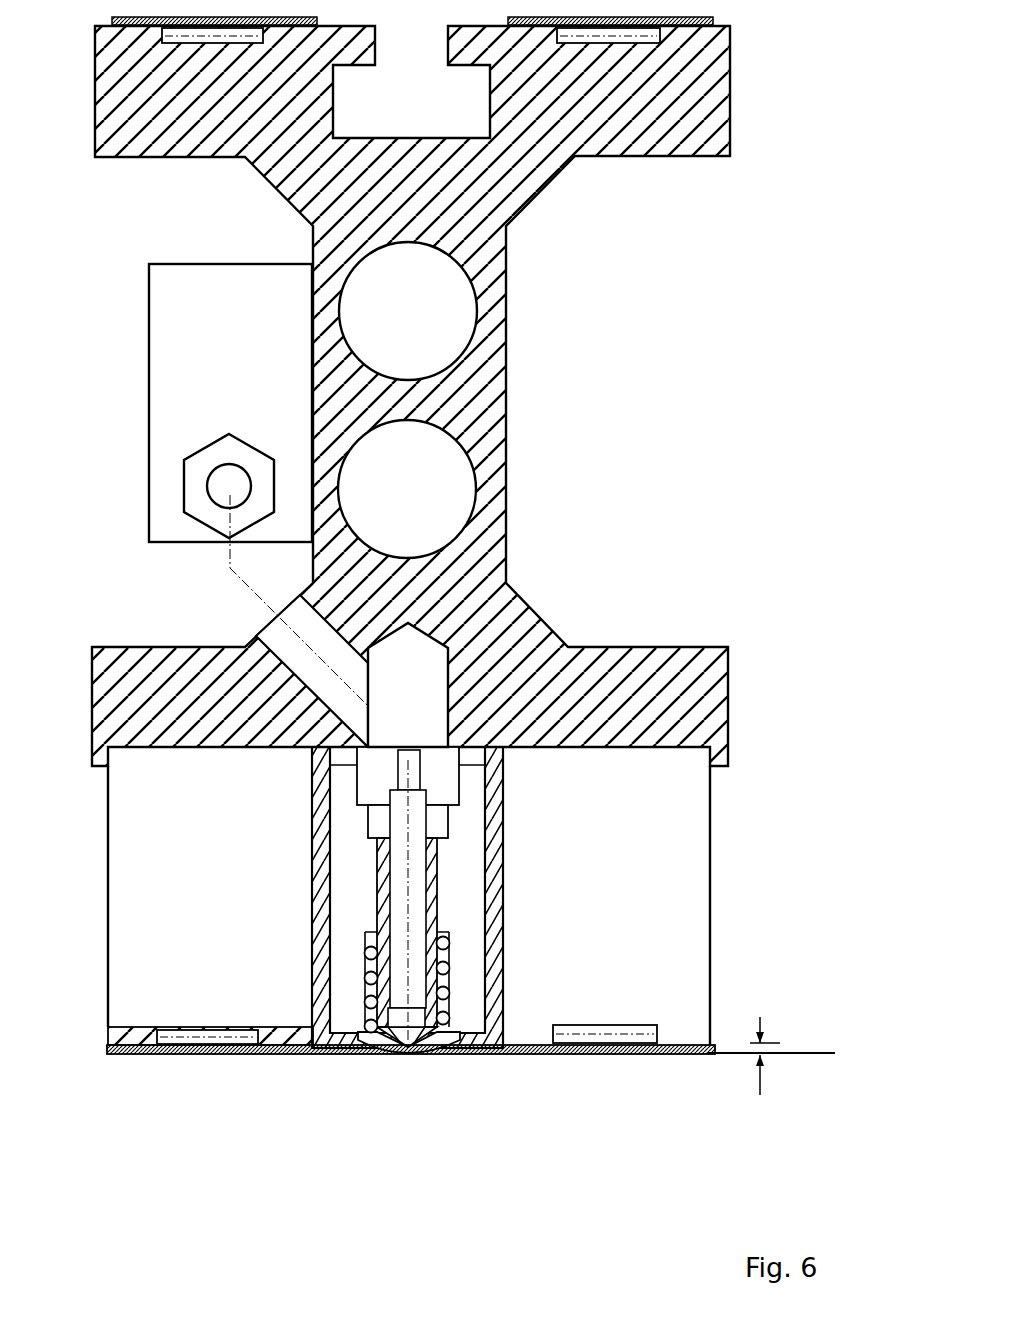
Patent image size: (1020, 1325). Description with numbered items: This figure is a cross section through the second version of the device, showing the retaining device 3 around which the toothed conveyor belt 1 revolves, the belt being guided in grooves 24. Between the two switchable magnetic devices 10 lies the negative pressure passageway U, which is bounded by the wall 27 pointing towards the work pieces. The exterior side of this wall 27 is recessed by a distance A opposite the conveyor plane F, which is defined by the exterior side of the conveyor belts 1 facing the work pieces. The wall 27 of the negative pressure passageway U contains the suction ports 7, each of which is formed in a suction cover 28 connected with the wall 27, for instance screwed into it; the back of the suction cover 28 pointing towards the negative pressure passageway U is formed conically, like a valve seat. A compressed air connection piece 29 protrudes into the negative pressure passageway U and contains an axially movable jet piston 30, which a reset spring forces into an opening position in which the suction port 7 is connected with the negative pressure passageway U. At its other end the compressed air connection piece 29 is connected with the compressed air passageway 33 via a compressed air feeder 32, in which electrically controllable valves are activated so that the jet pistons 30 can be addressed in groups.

The conveyor belt 1 is at (690, 1054).
The retaining device 3 is at (545, 160).
The suction port 7 is at (408, 1053).
The switchable magnetic device 10 is at (668, 852).
The groove 24 is at (167, 318).
The wall 27 is at (327, 1054).
The suction cover 28 is at (453, 1047).
The compressed air connection piece 29 is at (385, 885).
The jet piston 30 is at (377, 995).
The compressed air feeder 32 is at (270, 630).
The compressed air passageway 33 is at (438, 337).
The negative pressure passageway U is at (468, 1007).
The conveyor plane F is at (785, 1060).
The distance A is at (765, 1077).